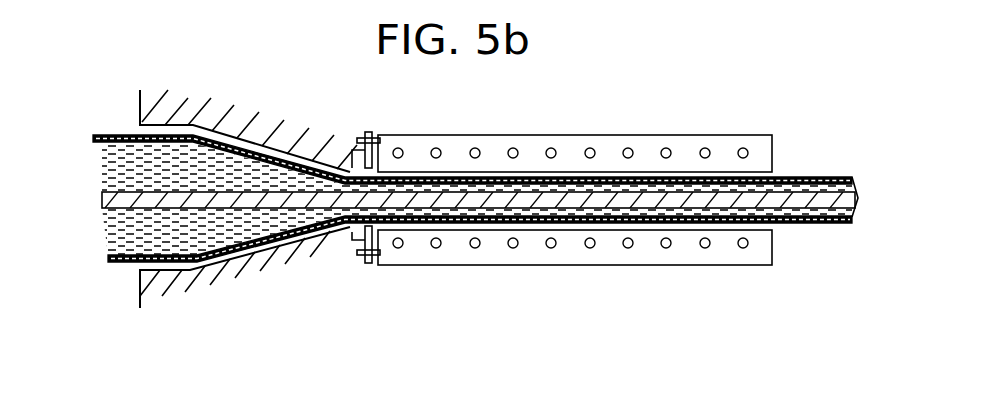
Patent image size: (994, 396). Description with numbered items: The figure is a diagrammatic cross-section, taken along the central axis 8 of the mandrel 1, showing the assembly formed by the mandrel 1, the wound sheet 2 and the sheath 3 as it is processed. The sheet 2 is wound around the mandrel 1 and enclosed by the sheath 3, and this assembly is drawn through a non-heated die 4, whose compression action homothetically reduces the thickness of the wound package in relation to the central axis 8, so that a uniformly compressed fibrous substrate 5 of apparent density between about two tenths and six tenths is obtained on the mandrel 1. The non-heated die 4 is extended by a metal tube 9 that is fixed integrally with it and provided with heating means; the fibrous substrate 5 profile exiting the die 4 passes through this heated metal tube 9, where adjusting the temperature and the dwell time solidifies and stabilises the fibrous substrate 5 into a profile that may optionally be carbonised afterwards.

The mandrel 1 is at (120, 190).
The wound sheet 2 is at (112, 223).
The sheath 3 is at (122, 262).
The non-heated die 4 is at (248, 130).
The fibrous substrate 5 is at (782, 182).
The central axis 8 is at (102, 200).
The metal tube 9 is at (543, 266).